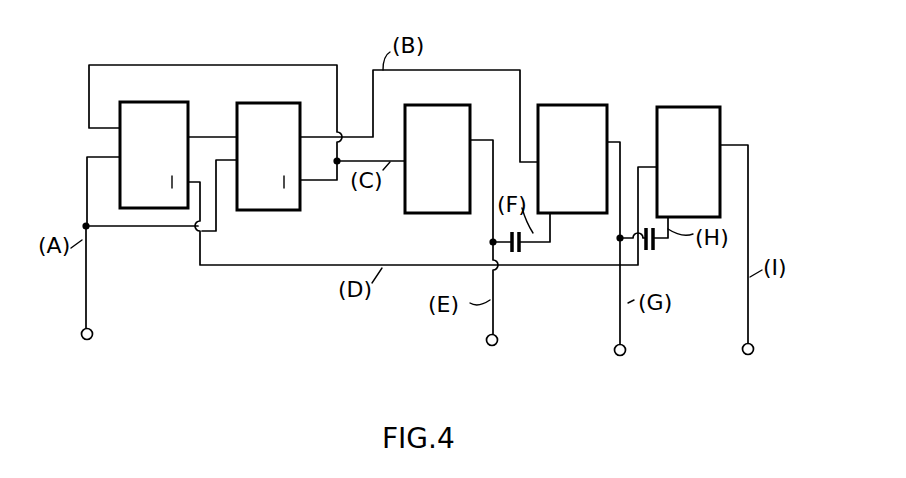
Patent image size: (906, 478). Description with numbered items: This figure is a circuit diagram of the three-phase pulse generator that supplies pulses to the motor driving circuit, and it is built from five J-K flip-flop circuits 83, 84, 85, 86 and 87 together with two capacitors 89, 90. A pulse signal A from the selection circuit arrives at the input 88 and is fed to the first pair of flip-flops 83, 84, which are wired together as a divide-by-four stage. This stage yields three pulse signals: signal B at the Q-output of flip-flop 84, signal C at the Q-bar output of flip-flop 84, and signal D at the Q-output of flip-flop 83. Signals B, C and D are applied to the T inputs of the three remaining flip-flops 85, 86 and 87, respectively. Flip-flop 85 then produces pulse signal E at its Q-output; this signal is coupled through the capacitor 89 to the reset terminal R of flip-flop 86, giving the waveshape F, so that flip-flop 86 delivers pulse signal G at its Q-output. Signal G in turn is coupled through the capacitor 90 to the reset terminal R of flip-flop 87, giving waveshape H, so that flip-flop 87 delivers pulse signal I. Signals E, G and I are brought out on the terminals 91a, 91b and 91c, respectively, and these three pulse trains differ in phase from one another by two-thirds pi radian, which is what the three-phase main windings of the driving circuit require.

The J-K flip-flop circuit 83 is at (180, 102).
The J-K flip-flop circuit 84 is at (278, 103).
The J-K flip-flop circuit 85 is at (443, 105).
The J-K flip-flop circuit 86 is at (578, 105).
The J-K flip-flop circuit 87 is at (690, 107).
The input 88 is at (93, 333).
The capacitor 89 is at (535, 248).
The capacitor 90 is at (647, 253).
The terminal 91a is at (498, 341).
The terminal 91b is at (626, 350).
The terminal 91c is at (755, 348).